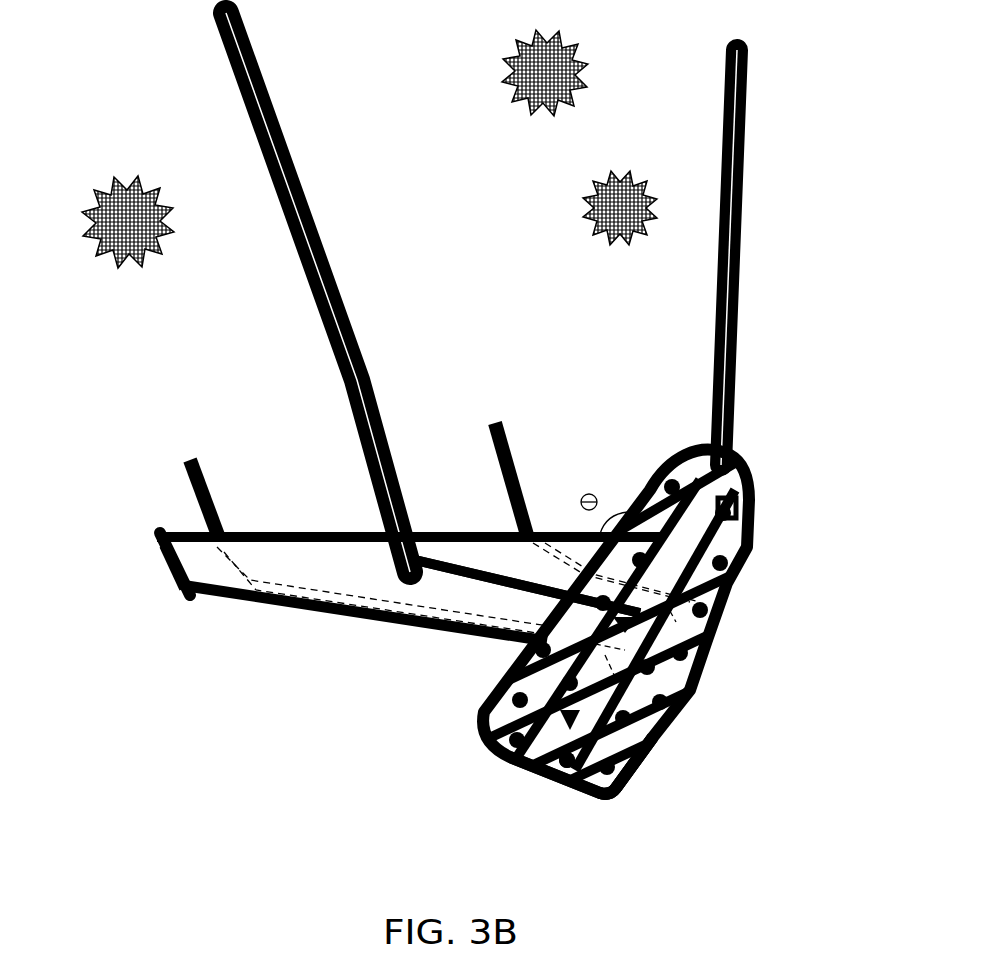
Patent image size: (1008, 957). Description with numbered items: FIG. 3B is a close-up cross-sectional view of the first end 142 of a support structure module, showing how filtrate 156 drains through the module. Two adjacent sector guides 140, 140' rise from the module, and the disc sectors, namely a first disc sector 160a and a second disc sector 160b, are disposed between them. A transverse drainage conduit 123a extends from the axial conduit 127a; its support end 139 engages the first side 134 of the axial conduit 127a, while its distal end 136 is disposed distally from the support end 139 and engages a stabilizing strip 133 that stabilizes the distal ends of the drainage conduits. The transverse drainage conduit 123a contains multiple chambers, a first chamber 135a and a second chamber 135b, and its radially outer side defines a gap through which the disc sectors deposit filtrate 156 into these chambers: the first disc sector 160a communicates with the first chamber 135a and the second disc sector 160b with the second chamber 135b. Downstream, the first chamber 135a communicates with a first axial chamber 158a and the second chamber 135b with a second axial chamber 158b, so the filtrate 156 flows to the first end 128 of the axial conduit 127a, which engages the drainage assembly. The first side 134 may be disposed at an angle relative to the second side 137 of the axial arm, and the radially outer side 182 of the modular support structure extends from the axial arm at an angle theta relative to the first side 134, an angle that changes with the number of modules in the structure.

The transverse drainage conduit 123a is at (210, 575).
The axial conduit 127a is at (618, 796).
The first end 128 is at (733, 643).
The stabilizing strip 133 is at (170, 572).
The first side 134 is at (621, 490).
The first chamber 135a is at (450, 547).
The second chamber 135b is at (165, 535).
The distal end 136 is at (112, 562).
The second side 137 is at (692, 727).
The support end 139 is at (494, 664).
The sector guide 140 is at (795, 257).
The sector guide 140' is at (318, 292).
The first end 142 is at (778, 330).
The filtrate 156 is at (185, 405).
The first axial chamber 158a is at (745, 528).
The second axial chamber 158b is at (552, 777).
The first disc sector 160a is at (638, 167).
The second disc sector 160b is at (128, 195).
The radially outer side 182 is at (297, 535).